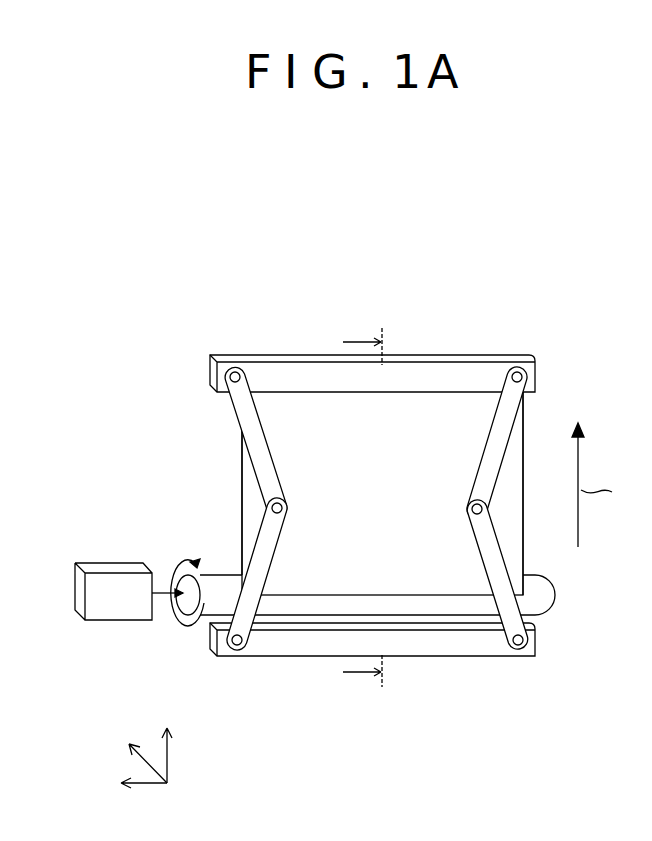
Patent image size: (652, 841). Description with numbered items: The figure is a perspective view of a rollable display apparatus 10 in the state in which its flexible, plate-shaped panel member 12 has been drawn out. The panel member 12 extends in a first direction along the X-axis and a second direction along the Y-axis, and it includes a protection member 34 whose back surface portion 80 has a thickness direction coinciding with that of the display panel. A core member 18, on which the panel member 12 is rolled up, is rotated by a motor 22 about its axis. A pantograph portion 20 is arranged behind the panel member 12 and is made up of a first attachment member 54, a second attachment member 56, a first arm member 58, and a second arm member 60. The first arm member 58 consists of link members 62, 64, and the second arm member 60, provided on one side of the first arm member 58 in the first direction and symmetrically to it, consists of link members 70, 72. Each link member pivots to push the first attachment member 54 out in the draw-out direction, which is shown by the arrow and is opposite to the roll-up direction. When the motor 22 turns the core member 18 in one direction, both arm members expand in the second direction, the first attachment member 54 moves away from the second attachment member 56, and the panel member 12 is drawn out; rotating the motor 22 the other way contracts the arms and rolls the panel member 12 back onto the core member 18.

The display apparatus 10 is at (160, 296).
The panel member 12 is at (234, 481).
The core member 18 is at (552, 590).
The pantograph portion 20 is at (583, 360).
The motor 22 is at (120, 605).
The protection member 34 is at (234, 504).
The first attachment member 54 is at (428, 374).
The second attachment member 56 is at (436, 645).
The first arm member 58 is at (534, 416).
The second arm member 60 is at (228, 422).
The link member 62 is at (498, 451).
The link member 64 is at (495, 553).
The link member 70 is at (253, 442).
The link member 72 is at (258, 548).
The back surface portion 80 is at (256, 517).